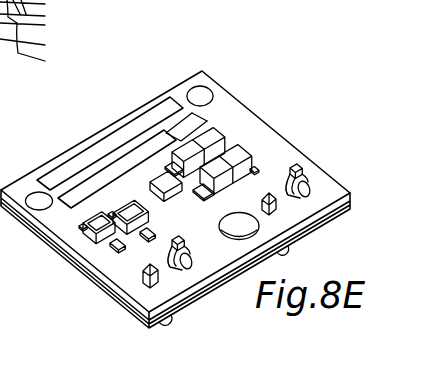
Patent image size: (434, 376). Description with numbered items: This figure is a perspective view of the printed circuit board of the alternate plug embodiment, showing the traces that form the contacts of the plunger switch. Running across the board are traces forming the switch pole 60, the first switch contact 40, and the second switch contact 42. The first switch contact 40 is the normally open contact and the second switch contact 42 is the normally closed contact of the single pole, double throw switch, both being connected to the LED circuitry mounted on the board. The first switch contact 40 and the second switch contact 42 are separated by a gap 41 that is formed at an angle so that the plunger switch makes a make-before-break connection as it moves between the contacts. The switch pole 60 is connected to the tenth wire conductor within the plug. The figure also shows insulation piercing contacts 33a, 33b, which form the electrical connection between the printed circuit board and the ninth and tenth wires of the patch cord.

The first switch contact 40 is at (80, 195).
The gap 41 is at (172, 133).
The second switch contact 42 is at (183, 128).
The switch pole 60 is at (110, 143).
The insulation piercing contact 33a is at (292, 170).
The insulation piercing contact 33b is at (180, 238).